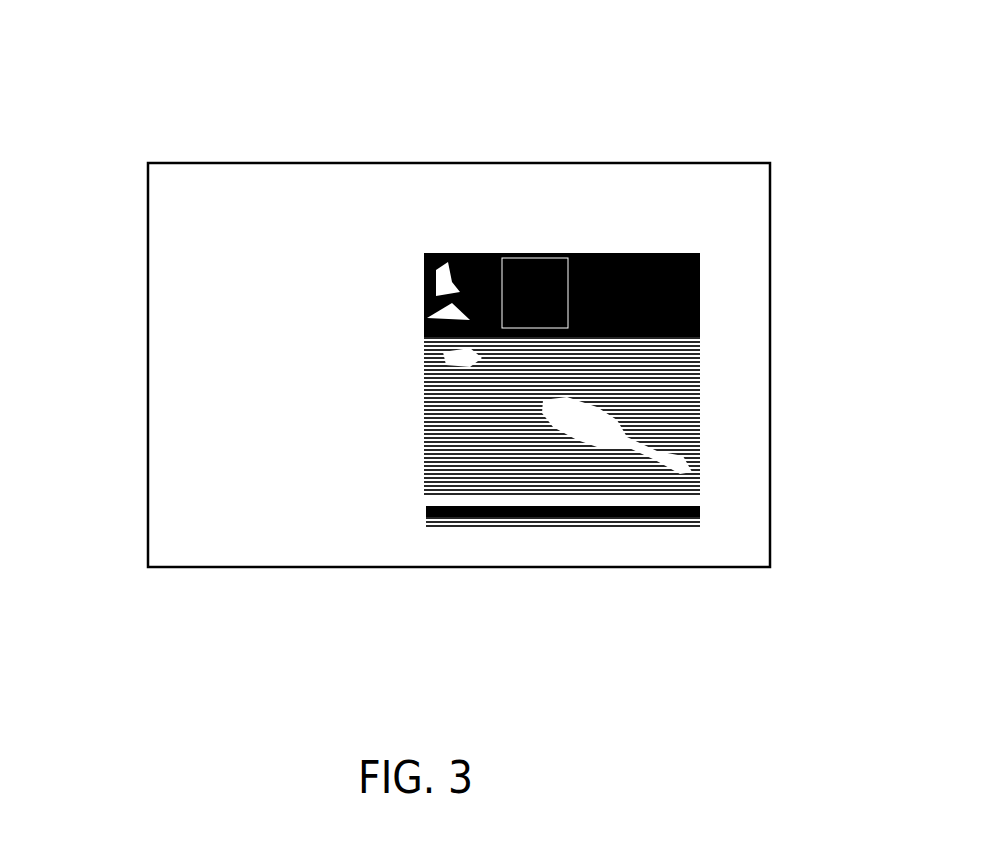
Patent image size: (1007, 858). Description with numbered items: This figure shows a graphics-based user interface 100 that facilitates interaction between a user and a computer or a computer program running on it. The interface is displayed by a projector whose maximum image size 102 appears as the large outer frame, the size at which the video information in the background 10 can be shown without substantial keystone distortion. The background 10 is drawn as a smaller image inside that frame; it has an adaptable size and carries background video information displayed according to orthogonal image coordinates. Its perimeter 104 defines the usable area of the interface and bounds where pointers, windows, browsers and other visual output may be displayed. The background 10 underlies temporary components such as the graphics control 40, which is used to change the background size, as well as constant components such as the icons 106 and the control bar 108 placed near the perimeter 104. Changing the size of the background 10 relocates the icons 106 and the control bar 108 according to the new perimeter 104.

The graphics-based user interface 100 is at (130, 65).
The maximum image size 102 is at (723, 160).
The background 10 is at (702, 250).
The perimeter 104 is at (700, 317).
The icons 106 is at (438, 253).
The graphics control 40 is at (500, 253).
The control bar 108 is at (592, 517).